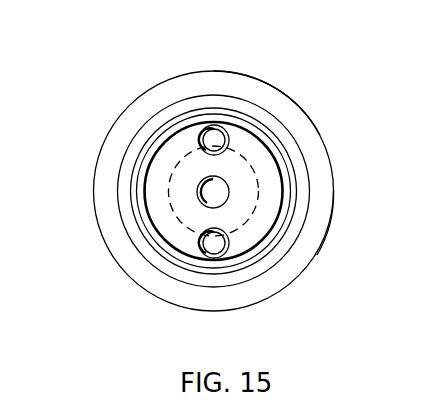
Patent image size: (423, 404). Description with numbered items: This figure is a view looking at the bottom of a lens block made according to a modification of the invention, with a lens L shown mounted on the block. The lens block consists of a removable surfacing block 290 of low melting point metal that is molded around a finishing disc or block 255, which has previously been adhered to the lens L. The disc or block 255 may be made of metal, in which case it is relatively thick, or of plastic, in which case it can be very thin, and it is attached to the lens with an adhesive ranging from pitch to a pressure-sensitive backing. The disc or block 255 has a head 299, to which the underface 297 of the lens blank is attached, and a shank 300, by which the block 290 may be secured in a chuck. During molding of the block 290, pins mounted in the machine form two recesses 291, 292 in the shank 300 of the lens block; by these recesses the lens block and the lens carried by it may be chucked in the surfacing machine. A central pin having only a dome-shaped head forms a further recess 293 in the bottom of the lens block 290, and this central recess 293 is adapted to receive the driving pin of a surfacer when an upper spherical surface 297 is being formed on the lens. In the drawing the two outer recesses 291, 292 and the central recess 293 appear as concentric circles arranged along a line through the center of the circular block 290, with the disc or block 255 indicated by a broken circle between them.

The recess 291 is at (223, 136).
The recess 292 is at (220, 243).
The recess 293 is at (200, 195).
The finishing disc or block 255 is at (258, 182).
The underface of the lens blank 297 is at (325, 190).
The low melting point block 290 is at (330, 219).
The shank 300 is at (272, 240).
The head 299 is at (172, 275).
The lens L is at (303, 119).